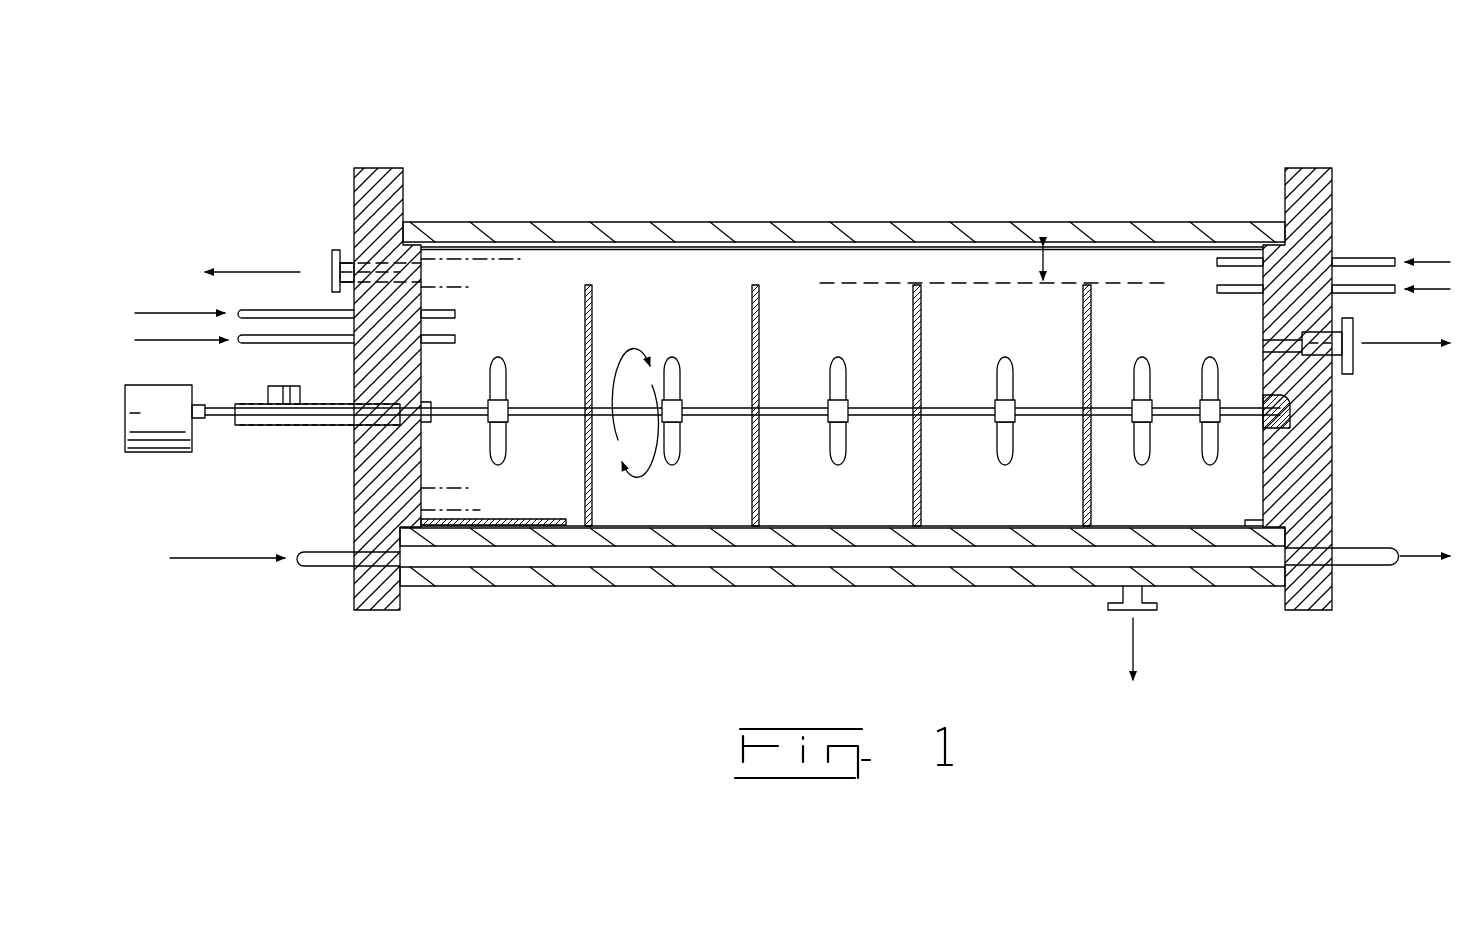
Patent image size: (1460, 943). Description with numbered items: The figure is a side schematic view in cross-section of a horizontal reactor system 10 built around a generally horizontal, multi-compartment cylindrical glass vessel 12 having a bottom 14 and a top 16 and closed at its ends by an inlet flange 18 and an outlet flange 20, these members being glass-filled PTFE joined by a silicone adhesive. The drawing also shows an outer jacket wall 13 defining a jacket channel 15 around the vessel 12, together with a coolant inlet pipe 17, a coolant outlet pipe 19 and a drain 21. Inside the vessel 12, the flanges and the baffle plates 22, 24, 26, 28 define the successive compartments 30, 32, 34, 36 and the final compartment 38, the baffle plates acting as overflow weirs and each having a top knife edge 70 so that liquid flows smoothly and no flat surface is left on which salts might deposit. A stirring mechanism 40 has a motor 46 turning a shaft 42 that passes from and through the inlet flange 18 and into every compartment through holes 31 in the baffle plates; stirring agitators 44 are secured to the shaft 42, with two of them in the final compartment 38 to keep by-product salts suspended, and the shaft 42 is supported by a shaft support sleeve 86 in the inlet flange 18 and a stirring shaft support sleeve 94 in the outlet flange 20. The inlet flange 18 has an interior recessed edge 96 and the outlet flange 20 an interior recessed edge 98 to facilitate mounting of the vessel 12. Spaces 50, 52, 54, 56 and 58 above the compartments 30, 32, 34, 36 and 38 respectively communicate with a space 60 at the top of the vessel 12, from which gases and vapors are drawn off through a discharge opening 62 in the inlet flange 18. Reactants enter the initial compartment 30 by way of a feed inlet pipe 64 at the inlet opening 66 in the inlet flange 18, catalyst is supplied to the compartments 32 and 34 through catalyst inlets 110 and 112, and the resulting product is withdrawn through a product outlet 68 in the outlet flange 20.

The reactor system 10 is at (935, 88).
The cylindrical glass vessel 12 is at (612, 232).
The outer jacket wall 13 is at (1012, 578).
The bottom 14 is at (883, 592).
The jacket channel 15 is at (760, 568).
The top 16 is at (803, 210).
The coolant inlet pipe 17 is at (330, 567).
The inlet flange 18 is at (358, 508).
The coolant outlet pipe 19 is at (1372, 567).
The outlet flange 20 is at (1312, 490).
The drain 21 is at (1146, 593).
The baffle plate 22 is at (585, 468).
The baffle plate 24 is at (750, 480).
The baffle plate 26 is at (914, 482).
The baffle plate 28 is at (1084, 478).
The compartment 30 is at (543, 373).
The holes 31 is at (598, 420).
The compartment 32 is at (711, 373).
The compartment 34 is at (878, 373).
The compartment 36 is at (1043, 373).
The final compartment 38 is at (1171, 370).
The stirring mechanism 40 is at (200, 490).
The shaft 42 is at (262, 427).
The stirring agitators 44 is at (492, 385).
The motor 46 is at (142, 454).
The space 50 is at (530, 268).
The space 52 is at (713, 270).
The space 54 is at (857, 272).
The space 56 is at (995, 272).
The space 58 is at (1175, 280).
The space 60 is at (1043, 262).
The discharge opening 62 is at (335, 252).
The feed inlet pipe 64 is at (282, 306).
The inlet opening 66 is at (290, 345).
The product outlet 68 is at (1356, 362).
The top knife edge 70 is at (588, 290).
The shaft support sleeve 86 is at (426, 420).
The stirring shaft support sleeve 94 is at (1300, 392).
The interior recessed edge 96 is at (445, 520).
The interior recessed edge 98 is at (1258, 525).
The catalyst inlet 110 is at (1390, 293).
The catalyst inlet 112 is at (1390, 260).